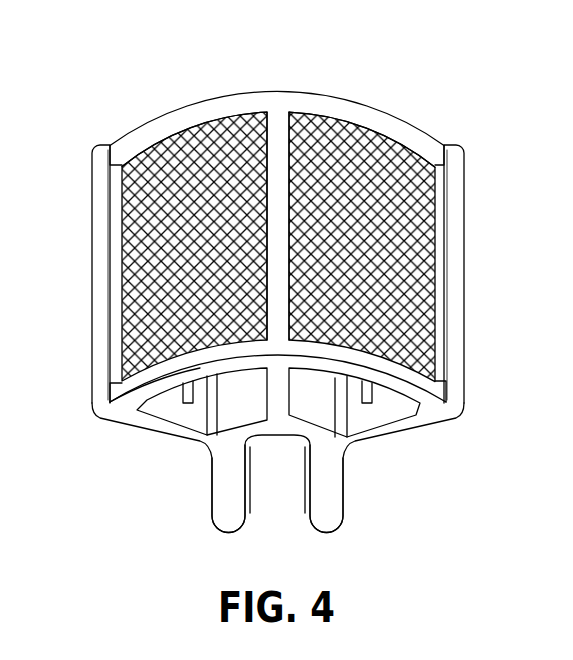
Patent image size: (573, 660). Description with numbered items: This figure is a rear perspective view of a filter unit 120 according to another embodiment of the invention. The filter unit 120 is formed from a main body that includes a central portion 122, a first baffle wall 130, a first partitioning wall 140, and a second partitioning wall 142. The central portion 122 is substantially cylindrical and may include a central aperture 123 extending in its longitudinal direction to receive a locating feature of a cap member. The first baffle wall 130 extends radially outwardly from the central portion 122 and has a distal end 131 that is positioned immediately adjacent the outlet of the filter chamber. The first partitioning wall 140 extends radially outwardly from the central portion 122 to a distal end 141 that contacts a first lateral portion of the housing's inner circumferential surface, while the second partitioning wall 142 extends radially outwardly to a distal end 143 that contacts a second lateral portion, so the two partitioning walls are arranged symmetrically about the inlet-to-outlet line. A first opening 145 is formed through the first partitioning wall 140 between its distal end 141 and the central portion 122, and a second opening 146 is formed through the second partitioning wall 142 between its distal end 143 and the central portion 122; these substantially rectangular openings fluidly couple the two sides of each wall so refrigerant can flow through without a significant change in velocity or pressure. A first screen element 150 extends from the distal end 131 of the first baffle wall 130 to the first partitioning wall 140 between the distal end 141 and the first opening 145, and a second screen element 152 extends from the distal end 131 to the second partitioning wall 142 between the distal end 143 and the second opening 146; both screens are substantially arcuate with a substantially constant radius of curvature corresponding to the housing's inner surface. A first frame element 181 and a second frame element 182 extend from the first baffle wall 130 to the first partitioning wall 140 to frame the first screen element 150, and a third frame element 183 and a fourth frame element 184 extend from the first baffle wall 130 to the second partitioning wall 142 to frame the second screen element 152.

The filter unit 120 is at (86, 92).
The central portion 122 is at (332, 448).
The central aperture 123 is at (279, 470).
The first baffle wall 130 is at (280, 397).
The distal end 131 is at (277, 360).
The first partitioning wall 140 is at (423, 420).
The distal end 141 is at (464, 405).
The second partitioning wall 142 is at (172, 430).
The distal end 143 is at (97, 407).
The first opening 145 is at (380, 392).
The second opening 146 is at (170, 396).
The first screen element 150 is at (403, 262).
The second screen element 152 is at (133, 210).
The first frame element 181 is at (380, 353).
The second frame element 182 is at (393, 122).
The third frame element 183 is at (172, 356).
The fourth frame element 184 is at (202, 108).